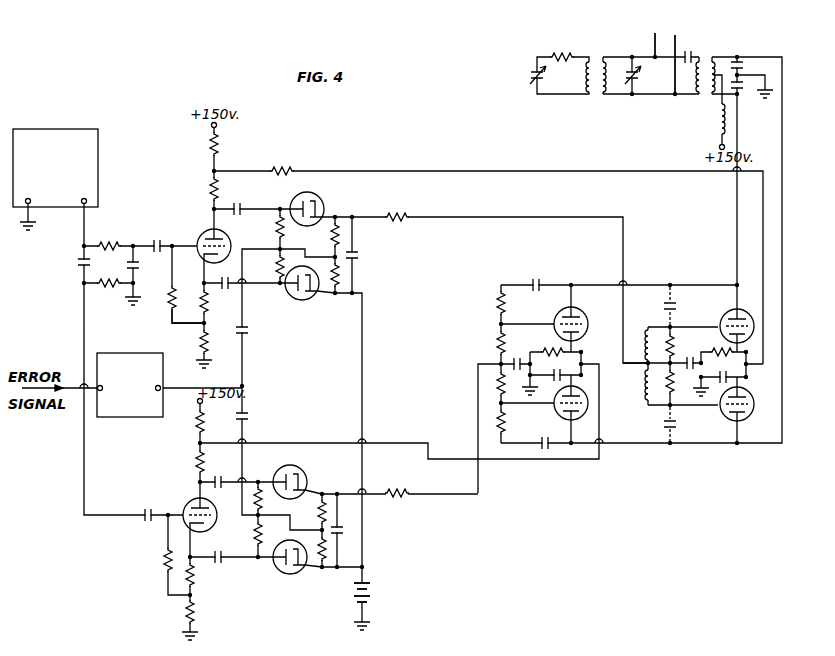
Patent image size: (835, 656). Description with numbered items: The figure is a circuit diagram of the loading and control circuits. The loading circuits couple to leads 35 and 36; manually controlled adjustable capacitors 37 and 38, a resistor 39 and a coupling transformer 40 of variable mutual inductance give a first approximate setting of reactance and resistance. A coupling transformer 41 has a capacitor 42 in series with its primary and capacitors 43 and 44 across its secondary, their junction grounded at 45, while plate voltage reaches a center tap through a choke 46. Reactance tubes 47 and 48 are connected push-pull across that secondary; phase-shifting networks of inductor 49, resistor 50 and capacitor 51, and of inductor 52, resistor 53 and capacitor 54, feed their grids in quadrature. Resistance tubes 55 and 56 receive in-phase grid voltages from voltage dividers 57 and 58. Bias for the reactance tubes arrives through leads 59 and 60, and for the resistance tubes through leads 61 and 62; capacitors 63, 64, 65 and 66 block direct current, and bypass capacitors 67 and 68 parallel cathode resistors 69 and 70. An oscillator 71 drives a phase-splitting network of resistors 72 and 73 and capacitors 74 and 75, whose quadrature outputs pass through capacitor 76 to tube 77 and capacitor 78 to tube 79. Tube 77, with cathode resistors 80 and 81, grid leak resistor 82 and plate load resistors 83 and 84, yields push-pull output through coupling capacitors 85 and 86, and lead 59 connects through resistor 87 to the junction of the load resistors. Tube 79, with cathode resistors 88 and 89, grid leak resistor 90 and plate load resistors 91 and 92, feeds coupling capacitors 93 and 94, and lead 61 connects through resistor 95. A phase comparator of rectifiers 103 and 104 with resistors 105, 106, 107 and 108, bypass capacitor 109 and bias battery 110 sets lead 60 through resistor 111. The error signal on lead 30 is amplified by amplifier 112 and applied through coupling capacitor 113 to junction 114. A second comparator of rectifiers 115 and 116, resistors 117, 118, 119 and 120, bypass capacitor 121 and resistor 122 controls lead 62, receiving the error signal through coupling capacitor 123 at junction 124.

The lead 30 is at (68, 386).
The lead 35 is at (653, 40).
The lead 36 is at (676, 42).
The adjustable capacitor 37 is at (521, 60).
The adjustable capacitor 38 is at (639, 82).
The resistor 39 is at (573, 52).
The coupling transformer 40 is at (595, 94).
The coupling transformer 41 is at (701, 96).
The capacitor 42 is at (706, 58).
The capacitor 43 is at (764, 46).
The capacitor 44 is at (741, 106).
The ground connection 45 is at (765, 56).
The choke 46 is at (718, 124).
The vacuum tube 47 is at (766, 303).
The vacuum tube 48 is at (724, 420).
The inductor 49 is at (647, 322).
The resistor 50 is at (676, 334).
The capacitor 51 is at (664, 294).
The inductor 52 is at (647, 389).
The resistor 53 is at (668, 404).
The capacitor 54 is at (676, 444).
The vacuum tube 55 is at (580, 314).
The vacuum tube 56 is at (572, 418).
The voltage divider 57 is at (490, 342).
The voltage divider 58 is at (488, 411).
The lead 59 is at (528, 176).
The lead 60 is at (521, 223).
The lead 61 is at (531, 460).
The lead 62 is at (463, 494).
The capacitor 63 is at (536, 282).
The capacitor 64 is at (538, 352).
The capacitor 65 is at (548, 452).
The capacitor 66 is at (708, 352).
The capacitor 67 is at (554, 380).
The capacitor 68 is at (749, 378).
The cathode resistor 69 is at (546, 313).
The cathode resistor 70 is at (722, 336).
The oscillator 71 is at (98, 150).
The resistor 72 is at (120, 236).
The resistor 73 is at (105, 284).
The capacitor 74 is at (72, 260).
The capacitor 75 is at (135, 270).
The capacitor 76 is at (164, 235).
The vacuum tube 77 is at (198, 233).
The capacitor 78 is at (144, 512).
The vacuum tube 79 is at (182, 510).
The cathode resistor 80 is at (178, 302).
The cathode resistor 81 is at (202, 344).
The grid leak resistor 82 is at (172, 310).
The plate load resistor 83 is at (215, 145).
The plate load resistor 84 is at (214, 192).
The coupling capacitor 85 is at (239, 206).
The coupling capacitor 86 is at (222, 291).
The resistor 87 is at (278, 170).
The cathode resistor 88 is at (198, 576).
The cathode resistor 89 is at (190, 614).
The grid leak resistor 90 is at (168, 569).
The plate load resistor 91 is at (192, 430).
The plate load resistor 92 is at (192, 463).
The coupling capacitor 93 is at (226, 477).
The coupling capacitor 94 is at (226, 560).
The resistor 95 is at (316, 430).
The vacuum tube rectifier 103 is at (318, 200).
The vacuum tube rectifier 104 is at (308, 296).
The resistor 105 is at (335, 216).
The resistor 106 is at (335, 276).
The resistor 107 is at (276, 274).
The resistor 108 is at (274, 240).
The bypass capacitor 109 is at (354, 254).
The battery 110 is at (374, 594).
The resistor 111 is at (390, 216).
The audio-frequency amplifier 112 is at (138, 347).
The coupling capacitor 113 is at (246, 330).
The circuit junction 114 is at (286, 250).
The vacuum tube rectifier 115 is at (299, 474).
The vacuum tube rectifier 116 is at (278, 574).
The resistor 117 is at (320, 498).
The resistor 118 is at (320, 558).
The resistor 119 is at (258, 537).
The resistor 120 is at (252, 483).
The bypass capacitor 121 is at (354, 530).
The resistor 122 is at (416, 476).
The coupling capacitor 123 is at (248, 417).
The circuit junction 124 is at (259, 513).